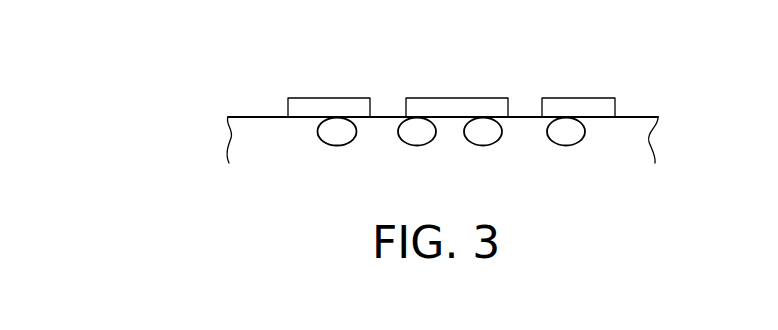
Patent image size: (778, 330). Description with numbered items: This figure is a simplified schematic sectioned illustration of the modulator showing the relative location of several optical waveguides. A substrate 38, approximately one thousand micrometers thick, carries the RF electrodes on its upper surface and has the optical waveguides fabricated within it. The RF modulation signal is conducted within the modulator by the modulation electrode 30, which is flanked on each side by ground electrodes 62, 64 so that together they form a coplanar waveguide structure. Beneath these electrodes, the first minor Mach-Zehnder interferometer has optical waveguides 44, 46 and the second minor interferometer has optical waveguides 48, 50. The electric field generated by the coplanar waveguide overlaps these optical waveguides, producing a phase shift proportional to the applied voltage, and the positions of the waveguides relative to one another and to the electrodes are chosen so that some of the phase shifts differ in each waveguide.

The substrate 38 is at (254, 138).
The ground electrode 62 is at (295, 108).
The modulation electrode 30 is at (480, 106).
The ground electrode 64 is at (608, 108).
The optical waveguide 44 is at (352, 164).
The optical waveguide 46 is at (433, 163).
The optical waveguide 48 is at (487, 163).
The optical waveguide 50 is at (553, 162).